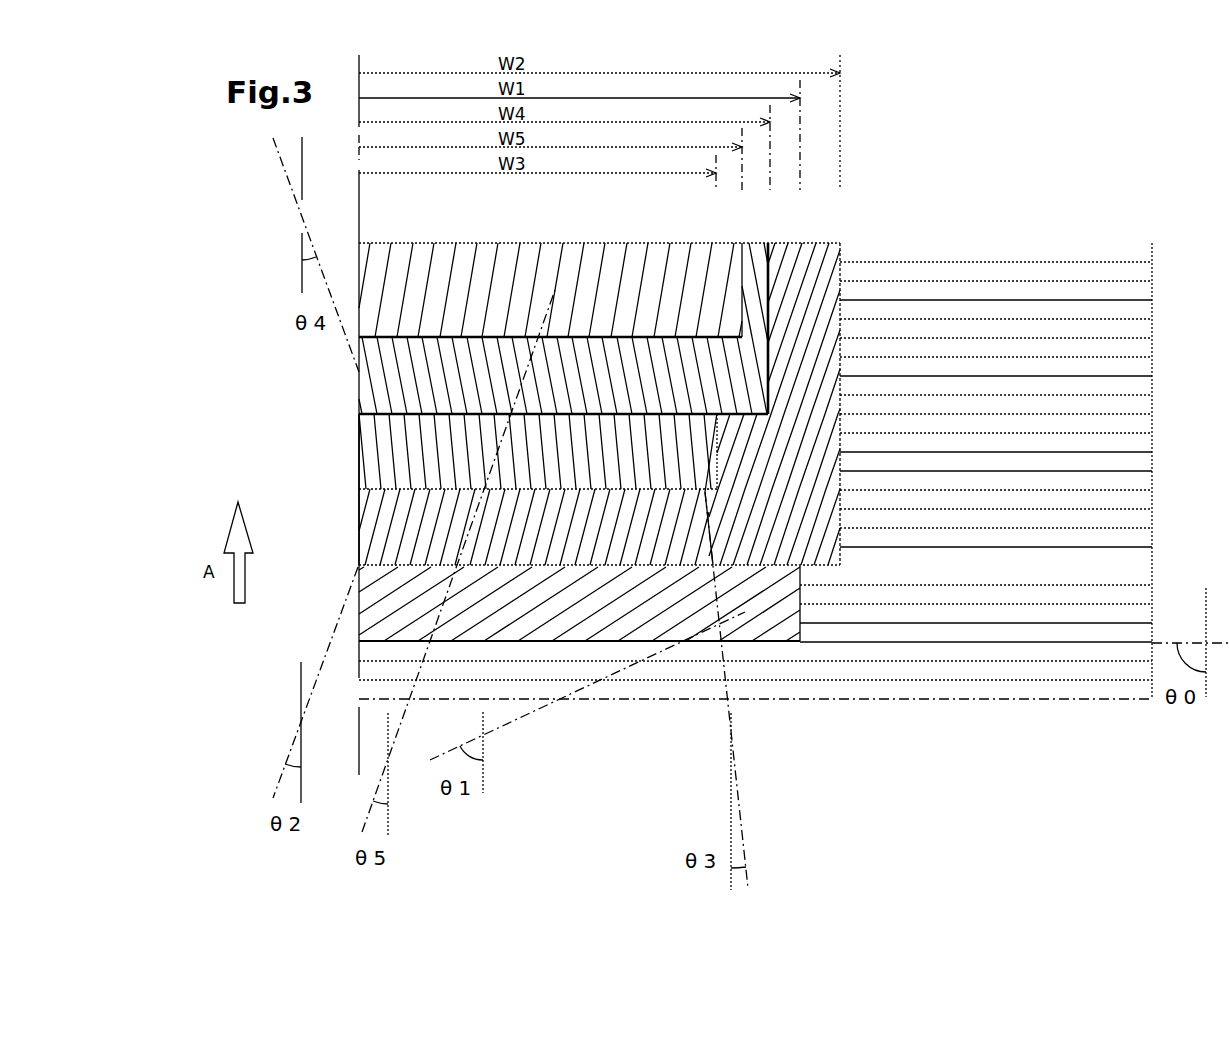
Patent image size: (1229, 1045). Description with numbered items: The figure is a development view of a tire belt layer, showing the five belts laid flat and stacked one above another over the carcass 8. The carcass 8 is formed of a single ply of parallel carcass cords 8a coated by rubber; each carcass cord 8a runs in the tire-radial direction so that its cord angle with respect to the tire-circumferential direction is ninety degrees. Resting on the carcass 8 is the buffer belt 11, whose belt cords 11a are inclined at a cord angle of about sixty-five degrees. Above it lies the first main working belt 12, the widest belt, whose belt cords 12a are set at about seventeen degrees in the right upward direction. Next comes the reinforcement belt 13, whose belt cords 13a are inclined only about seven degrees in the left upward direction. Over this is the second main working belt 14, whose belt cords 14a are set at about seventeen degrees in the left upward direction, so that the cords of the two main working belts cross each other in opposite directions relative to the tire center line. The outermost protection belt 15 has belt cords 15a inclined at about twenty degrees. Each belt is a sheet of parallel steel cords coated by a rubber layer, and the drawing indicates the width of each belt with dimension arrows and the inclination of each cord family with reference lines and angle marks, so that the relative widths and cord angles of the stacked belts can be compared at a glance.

The carcass 8 is at (1087, 688).
The carcass cord 8a is at (1005, 688).
The buffer belt 11 is at (760, 642).
The belt cord of the buffer belt 11a is at (737, 642).
The first main working belt 12 is at (359, 497).
The belt cord of the first main working belt 12a is at (363, 527).
The reinforcement belt 13 is at (359, 421).
The belt cord of the reinforcement belt 13a is at (359, 448).
The second main working belt 14 is at (792, 292).
The belt cord of the second main working belt 14a is at (778, 265).
The protection belt 15 is at (433, 250).
The belt cord of the protection belt 15a is at (486, 262).